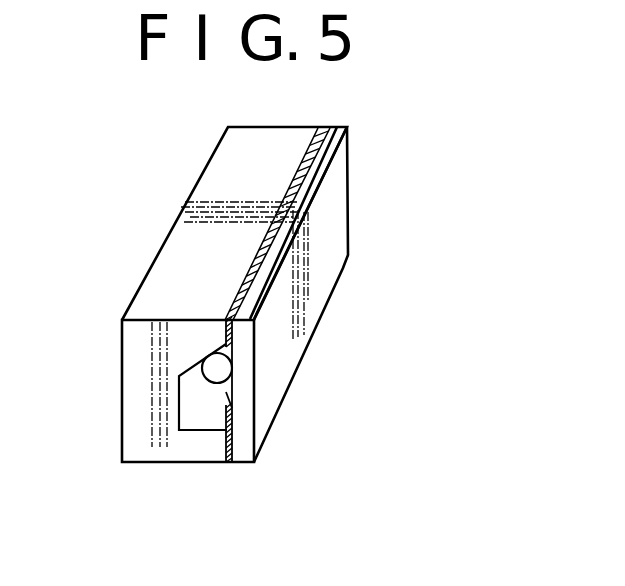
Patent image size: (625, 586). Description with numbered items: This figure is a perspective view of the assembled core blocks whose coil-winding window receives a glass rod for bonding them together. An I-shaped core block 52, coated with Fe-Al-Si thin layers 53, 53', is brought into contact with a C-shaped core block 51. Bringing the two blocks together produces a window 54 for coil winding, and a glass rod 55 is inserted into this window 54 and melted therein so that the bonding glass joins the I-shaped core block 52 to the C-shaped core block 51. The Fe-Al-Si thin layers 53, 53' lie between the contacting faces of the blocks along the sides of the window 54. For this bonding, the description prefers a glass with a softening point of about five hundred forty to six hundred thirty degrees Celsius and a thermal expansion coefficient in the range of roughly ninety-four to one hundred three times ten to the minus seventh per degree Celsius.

The C-shaped core block 51 is at (132, 372).
The I-shaped core block 52 is at (262, 427).
The Fe-Al-Si thin layer 53 is at (250, 295).
The Fe-Al-Si thin layer 53' is at (243, 458).
The window 54 is at (197, 418).
The glass rod 55 is at (222, 366).